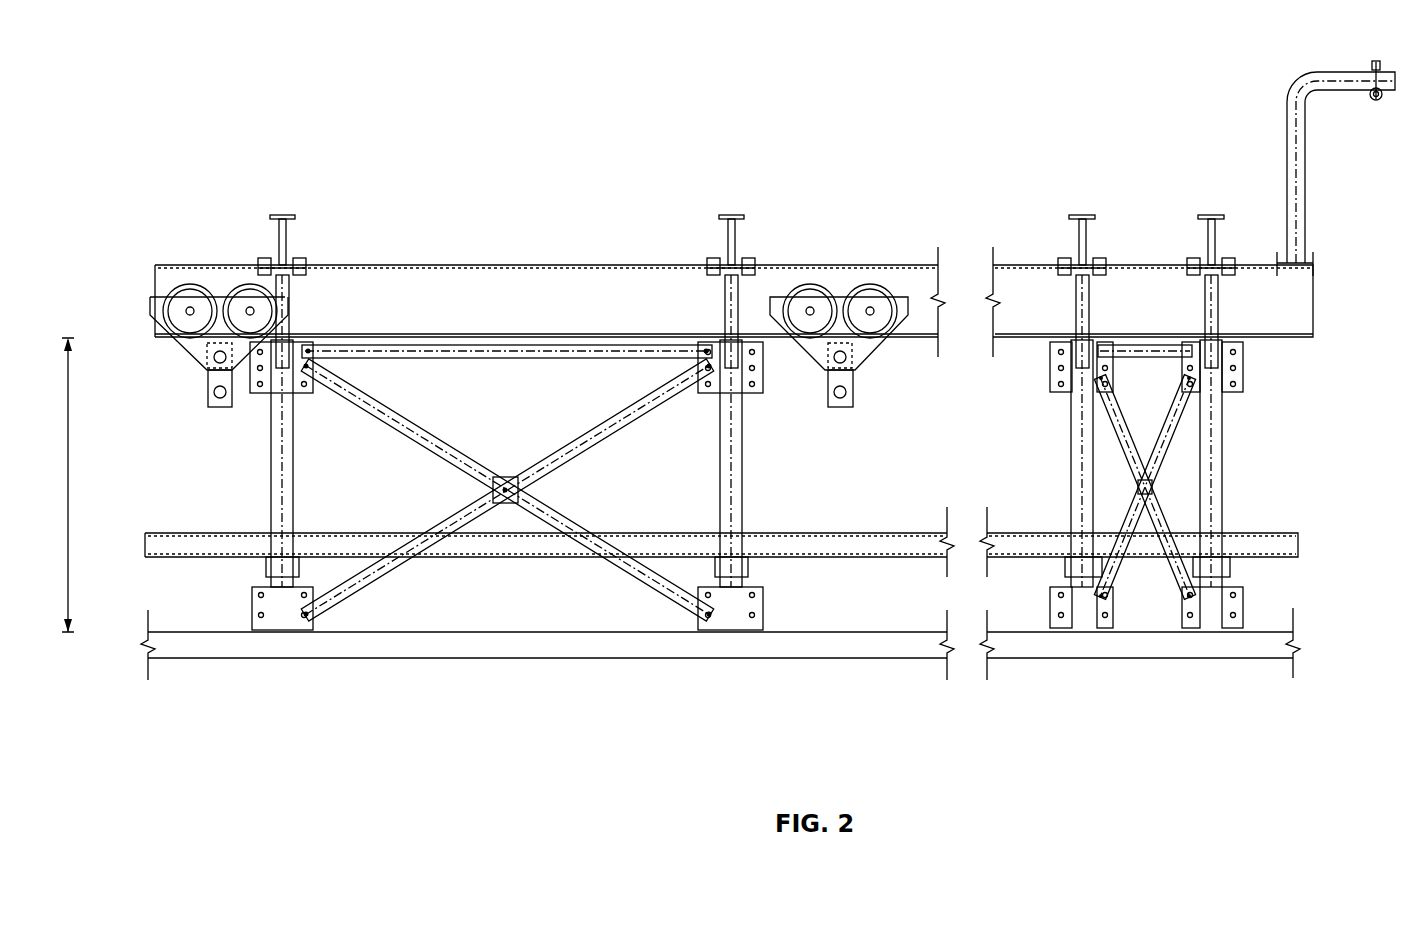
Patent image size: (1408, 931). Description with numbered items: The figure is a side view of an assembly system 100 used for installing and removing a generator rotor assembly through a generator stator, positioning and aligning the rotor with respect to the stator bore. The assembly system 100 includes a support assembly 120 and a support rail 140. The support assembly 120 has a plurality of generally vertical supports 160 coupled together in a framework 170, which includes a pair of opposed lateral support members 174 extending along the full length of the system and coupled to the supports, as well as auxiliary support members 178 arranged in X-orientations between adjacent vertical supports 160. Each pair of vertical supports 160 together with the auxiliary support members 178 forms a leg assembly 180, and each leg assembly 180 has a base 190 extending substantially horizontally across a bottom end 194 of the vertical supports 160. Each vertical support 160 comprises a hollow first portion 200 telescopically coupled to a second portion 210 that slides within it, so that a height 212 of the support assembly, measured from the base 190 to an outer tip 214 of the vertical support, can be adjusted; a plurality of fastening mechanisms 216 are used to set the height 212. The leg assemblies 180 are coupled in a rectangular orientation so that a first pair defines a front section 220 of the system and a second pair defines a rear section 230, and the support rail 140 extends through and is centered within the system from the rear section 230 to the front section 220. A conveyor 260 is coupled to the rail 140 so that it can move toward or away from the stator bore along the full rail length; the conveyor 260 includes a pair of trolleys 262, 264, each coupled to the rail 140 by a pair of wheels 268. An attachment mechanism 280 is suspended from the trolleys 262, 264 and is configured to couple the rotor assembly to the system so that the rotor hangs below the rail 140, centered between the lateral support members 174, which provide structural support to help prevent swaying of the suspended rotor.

The assembly system 100 is at (243, 112).
The support assembly 120 is at (1265, 408).
The support rail 140 is at (403, 280).
The vertical support 160 is at (733, 483).
The framework 170 is at (405, 567).
The lateral support member 174 is at (775, 548).
The auxiliary support member 178 is at (627, 572).
The leg assembly 180 is at (257, 665).
The base 190 is at (1291, 670).
The bottom end 194 is at (252, 627).
The first portion 200 is at (272, 463).
The second portion 210 is at (285, 327).
The height 212 is at (72, 483).
The outer tip 214 is at (722, 287).
The fastening mechanism 216 is at (1052, 377).
The front section 220 is at (550, 665).
The rear section 230 is at (1178, 670).
The conveyor 260 is at (142, 313).
The trolley 262 is at (197, 348).
The trolley 264 is at (863, 350).
The wheel 268 is at (190, 290).
The attachment mechanism 280 is at (210, 402).